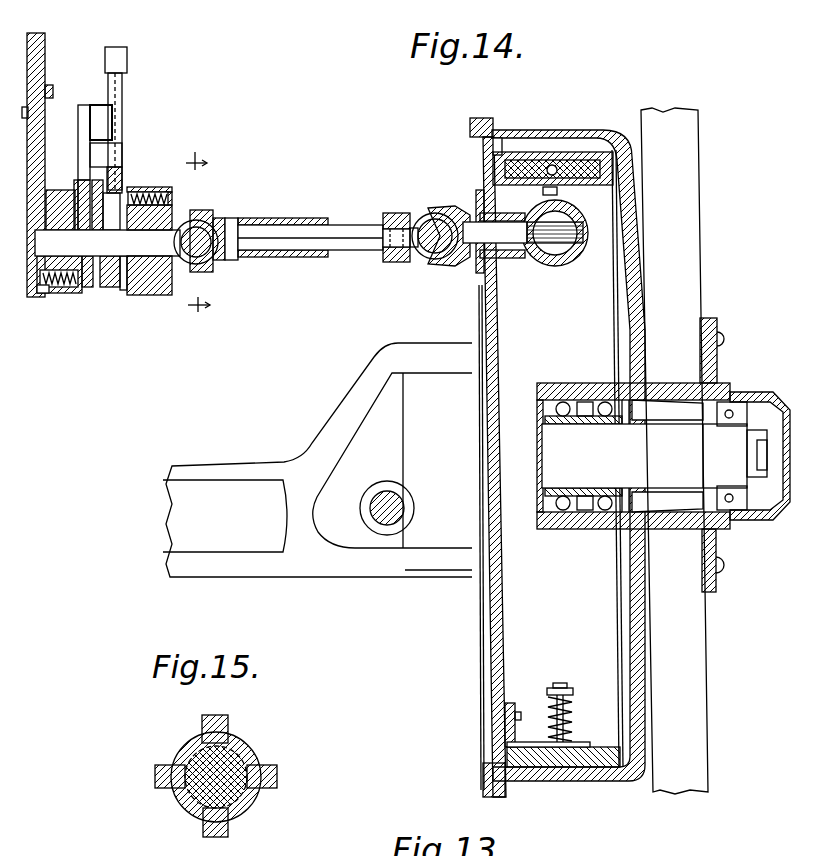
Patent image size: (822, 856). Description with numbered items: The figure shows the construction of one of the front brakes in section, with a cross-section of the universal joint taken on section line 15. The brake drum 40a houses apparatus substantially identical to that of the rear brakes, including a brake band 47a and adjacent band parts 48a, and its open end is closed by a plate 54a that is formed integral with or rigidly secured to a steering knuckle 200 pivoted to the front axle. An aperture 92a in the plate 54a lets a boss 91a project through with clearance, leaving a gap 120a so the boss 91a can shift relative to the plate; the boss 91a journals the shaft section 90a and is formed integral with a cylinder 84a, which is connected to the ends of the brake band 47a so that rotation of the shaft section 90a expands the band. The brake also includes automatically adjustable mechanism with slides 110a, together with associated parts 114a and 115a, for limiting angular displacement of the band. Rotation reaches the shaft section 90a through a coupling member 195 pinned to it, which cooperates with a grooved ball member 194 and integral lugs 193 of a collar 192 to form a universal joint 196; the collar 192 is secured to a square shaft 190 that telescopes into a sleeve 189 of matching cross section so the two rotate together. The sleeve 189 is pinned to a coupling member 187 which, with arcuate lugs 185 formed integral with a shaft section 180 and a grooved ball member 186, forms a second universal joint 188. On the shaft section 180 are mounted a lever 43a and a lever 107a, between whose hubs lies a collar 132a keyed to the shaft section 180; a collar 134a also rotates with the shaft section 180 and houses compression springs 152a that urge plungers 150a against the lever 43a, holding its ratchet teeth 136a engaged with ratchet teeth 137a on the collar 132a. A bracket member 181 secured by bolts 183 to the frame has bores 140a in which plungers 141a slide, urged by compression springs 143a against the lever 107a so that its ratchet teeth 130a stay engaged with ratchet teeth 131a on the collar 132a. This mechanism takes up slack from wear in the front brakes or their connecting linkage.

In FIG. 14, the brake drum 40a is at (560, 130).
In FIG. 14, the lever 43a is at (122, 88).
In FIG. 14, the brake band 47a is at (608, 767).
In FIG. 14, the bottom liner 48a is at (548, 767).
In FIG. 14, the plate 54a is at (494, 626).
In FIG. 14, the cylinder 84a is at (586, 262).
In FIG. 14, the shaft section 90a is at (511, 243).
In FIG. 14, the boss 91a is at (508, 213).
In FIG. 14, the aperture 92a is at (488, 272).
In FIG. 14, the lever 107a is at (92, 99).
In FIG. 14, the slide 110a is at (515, 170).
In FIG. 14, the washer 114a is at (548, 166).
In FIG. 14, the bolt 115a is at (574, 158).
In FIG. 14, the gap 120a is at (493, 165).
In FIG. 14, the ratchet teeth 130a is at (78, 183).
In FIG. 14, the ratchet teeth 131a is at (70, 187).
In FIG. 14, the collar 132a is at (117, 167).
In FIG. 14, the collar 134a is at (176, 189).
In FIG. 14, the ratchet teeth 136a is at (124, 292).
In FIG. 14, the ratchet teeth 137a is at (102, 290).
In FIG. 14, the bore 140a is at (46, 292).
In FIG. 14, the plunger 141a is at (160, 190).
In FIG. 14, the compression spring 143a is at (55, 297).
In FIG. 14, the plunger 150a is at (114, 189).
In FIG. 14, the compression spring 152a is at (171, 191).
In FIG. 14, the shaft section 180 is at (157, 248).
In FIG. 14, the bracket member 181 is at (37, 300).
In FIG. 14, the bolt 183 is at (73, 73).
In FIG. 14, the arcuate lug 185 is at (180, 254).
In FIG. 15, the arcuate lug 185 is at (278, 777).
In FIG. 14, the ball 186 is at (212, 258).
In FIG. 15, the ball 186 is at (248, 760).
In FIG. 14, the coupling member 187 is at (216, 215).
In FIG. 15, the coupling member 187 is at (208, 722).
In FIG. 14, the universal joint 188 is at (224, 214).
In FIG. 15, the universal joint 188 is at (252, 728).
In FIG. 14, the sleeve 189 is at (280, 224).
In FIG. 15, the sleeve 189 is at (257, 803).
In FIG. 14, the square shaft 190 is at (335, 226).
In FIG. 14, the collar 192 is at (391, 213).
In FIG. 14, the lug 193 is at (412, 248).
In FIG. 14, the grooved ball member 194 is at (424, 262).
In FIG. 14, the coupling member 195 is at (452, 262).
In FIG. 14, the universal joint 196 is at (433, 206).
In FIG. 14, the steering knuckle 200 is at (451, 522).
In FIG. 14, the section line 15 is at (196, 234).